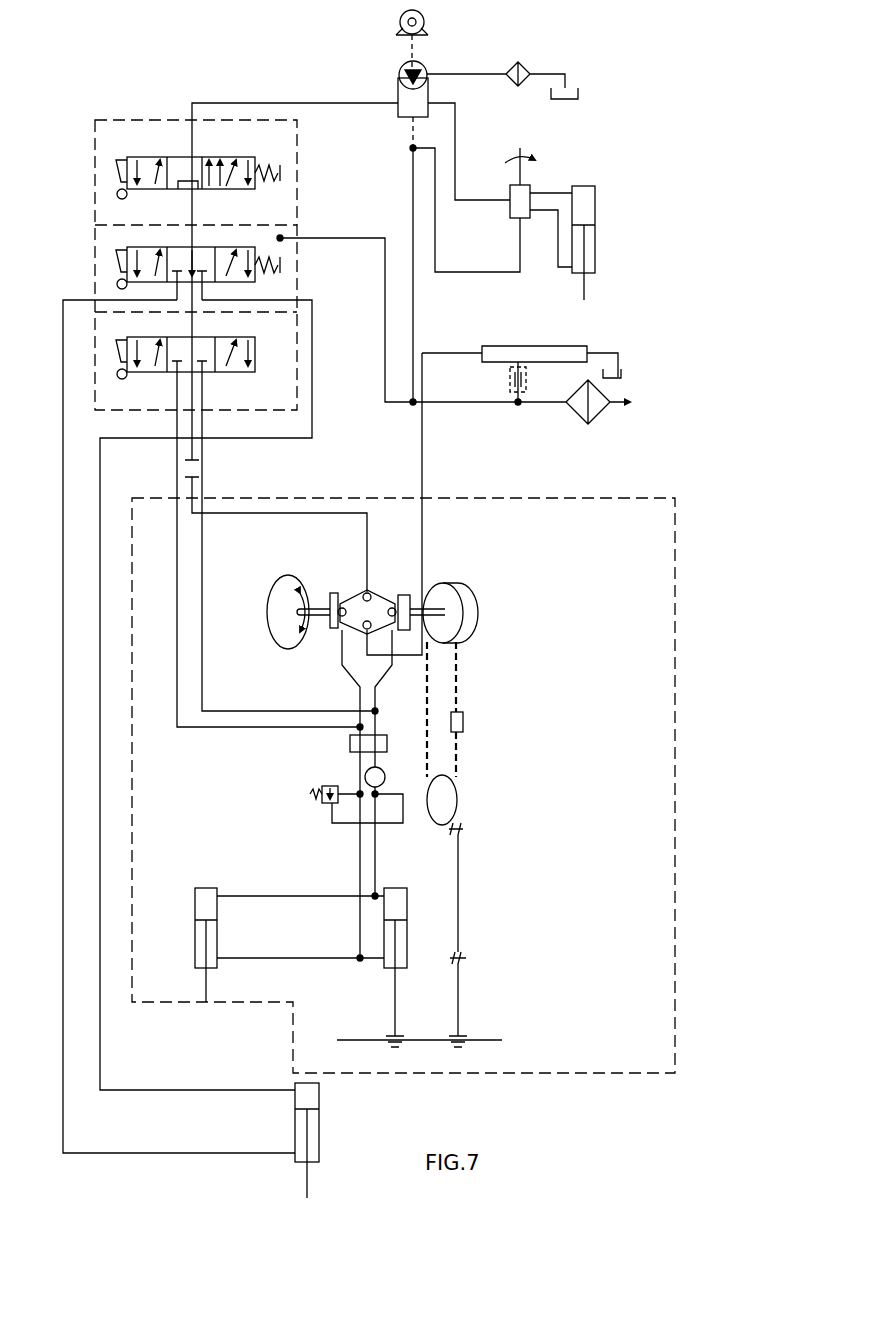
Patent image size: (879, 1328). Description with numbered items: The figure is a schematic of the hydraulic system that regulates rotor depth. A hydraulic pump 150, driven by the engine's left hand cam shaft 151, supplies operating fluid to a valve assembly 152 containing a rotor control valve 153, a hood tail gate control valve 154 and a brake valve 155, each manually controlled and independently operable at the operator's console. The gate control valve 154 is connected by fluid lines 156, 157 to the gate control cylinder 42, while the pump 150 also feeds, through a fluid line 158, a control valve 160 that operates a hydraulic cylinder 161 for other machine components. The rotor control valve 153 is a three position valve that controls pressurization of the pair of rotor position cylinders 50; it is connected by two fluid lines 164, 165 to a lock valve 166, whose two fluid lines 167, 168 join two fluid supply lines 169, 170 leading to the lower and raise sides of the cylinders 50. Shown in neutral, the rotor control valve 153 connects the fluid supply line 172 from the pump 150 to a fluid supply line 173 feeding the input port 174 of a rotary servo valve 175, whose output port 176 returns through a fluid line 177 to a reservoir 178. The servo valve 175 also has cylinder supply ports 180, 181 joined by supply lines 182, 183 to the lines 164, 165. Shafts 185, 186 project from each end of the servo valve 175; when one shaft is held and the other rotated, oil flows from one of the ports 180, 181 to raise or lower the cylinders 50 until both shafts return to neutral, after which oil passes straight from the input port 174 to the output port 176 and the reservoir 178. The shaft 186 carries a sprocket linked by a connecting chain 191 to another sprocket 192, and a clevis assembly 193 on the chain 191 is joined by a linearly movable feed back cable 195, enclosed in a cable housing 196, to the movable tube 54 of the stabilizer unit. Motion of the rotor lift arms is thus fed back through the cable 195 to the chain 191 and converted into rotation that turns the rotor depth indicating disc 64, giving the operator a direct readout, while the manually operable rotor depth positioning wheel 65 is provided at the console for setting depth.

The left hand cam shaft 151 is at (425, 22).
The hydraulic pump 150 is at (426, 70).
The fluid supply line 172 is at (330, 101).
The fluid line 158 is at (456, 130).
The control valve 160 is at (510, 191).
The hydraulic cylinder 161 is at (596, 210).
The reservoir 178 is at (628, 376).
The valve assembly 152 is at (95, 147).
The brake valve 155 is at (232, 152).
The hood tail gate control valve 154 is at (232, 232).
The rotor control valve 153 is at (242, 338).
The fluid line 156 is at (62, 430).
The fluid line 157 is at (101, 470).
The fluid supply line 173 is at (305, 510).
The fluid line 177 is at (424, 523).
The fluid line 164 is at (177, 462).
The fluid line 165 is at (203, 455).
The rotor depth positioning wheel 65 is at (283, 645).
The shaft 185 is at (329, 598).
The rotary servo valve 175 is at (348, 598).
The input port 174 is at (370, 594).
The output port 176 is at (365, 629).
The cylinder supply port 180 is at (338, 626).
The cylinder supply port 181 is at (410, 601).
The shaft 186 is at (420, 606).
The rotor depth indicating disc 64 is at (478, 609).
The connecting chain 191 is at (458, 672).
The clevis assembly 193 is at (464, 722).
The sprocket 192 is at (452, 796).
The cable housing 196 is at (465, 829).
The feed back cable 195 is at (460, 892).
The supply line 182 is at (359, 694).
The supply line 183 is at (378, 694).
The lock valve 166 is at (350, 745).
The fluid line 168 is at (384, 772).
The fluid line 167 is at (360, 770).
The fluid supply line 169 is at (288, 895).
The fluid supply line 170 is at (303, 957).
The rotor position cylinders 50 is at (217, 933).
The movable tube 54 is at (480, 1040).
The gate control cylinder 42 is at (320, 1121).